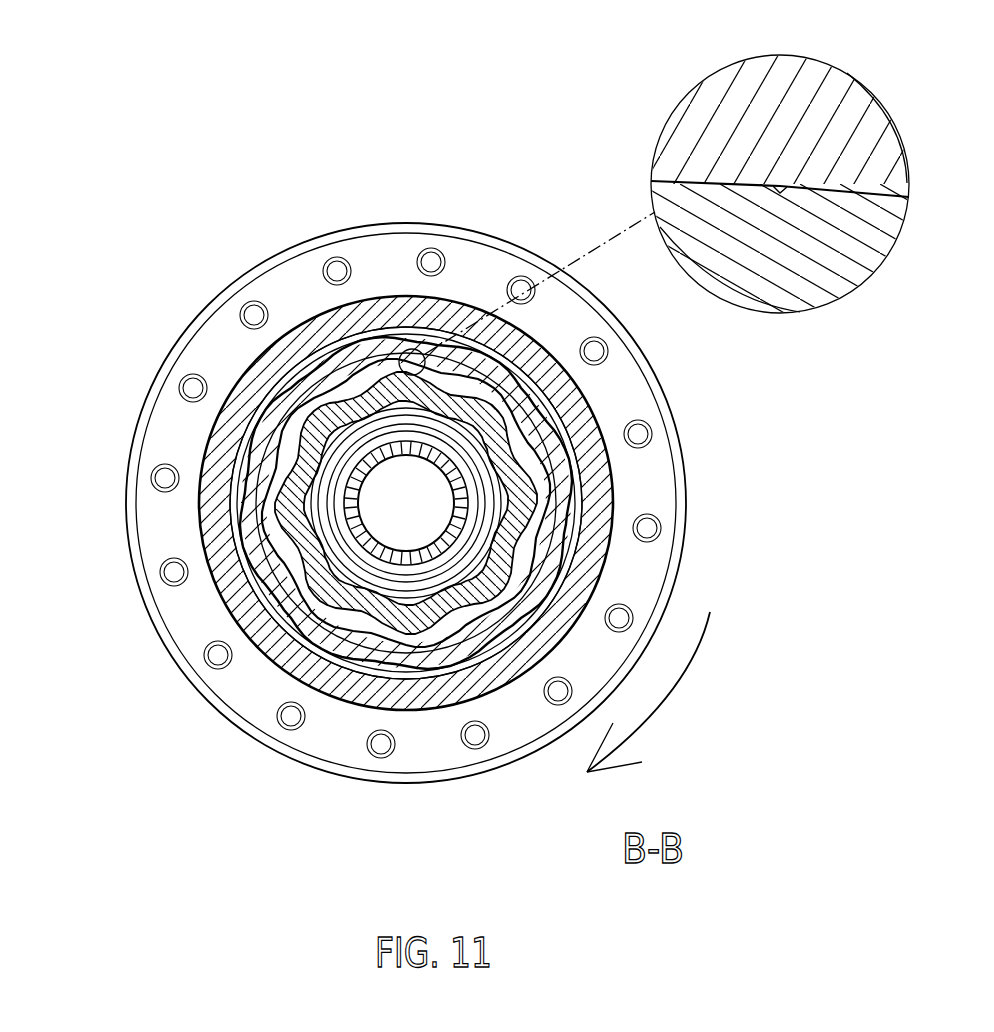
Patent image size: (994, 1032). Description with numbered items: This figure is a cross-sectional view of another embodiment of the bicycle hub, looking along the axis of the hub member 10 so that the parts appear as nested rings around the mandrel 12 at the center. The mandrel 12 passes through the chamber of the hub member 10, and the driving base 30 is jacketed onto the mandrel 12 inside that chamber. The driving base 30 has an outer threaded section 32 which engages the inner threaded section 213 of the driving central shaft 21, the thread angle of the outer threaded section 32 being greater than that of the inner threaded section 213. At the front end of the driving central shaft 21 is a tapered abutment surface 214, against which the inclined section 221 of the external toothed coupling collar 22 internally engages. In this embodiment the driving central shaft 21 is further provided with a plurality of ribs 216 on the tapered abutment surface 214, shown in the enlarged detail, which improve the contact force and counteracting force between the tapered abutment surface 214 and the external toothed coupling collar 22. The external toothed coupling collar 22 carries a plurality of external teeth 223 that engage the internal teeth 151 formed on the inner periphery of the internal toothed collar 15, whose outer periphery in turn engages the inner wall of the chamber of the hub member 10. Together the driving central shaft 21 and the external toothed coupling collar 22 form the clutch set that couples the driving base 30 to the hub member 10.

The hub member 10 is at (197, 287).
The mandrel 12 is at (352, 499).
The internal toothed collar 15 is at (547, 397).
The internal teeth 151 is at (599, 419).
The driving central shaft 21 is at (541, 494).
The inner threaded section 213 is at (546, 537).
The tapered abutment surface 214 is at (349, 340).
The ribs 216 is at (779, 183).
The external toothed coupling collar 22 is at (544, 412).
The inclined section 221 is at (326, 340).
The external teeth 223 is at (651, 259).
The driving base 30 is at (299, 439).
The outer threaded section 32 is at (554, 462).